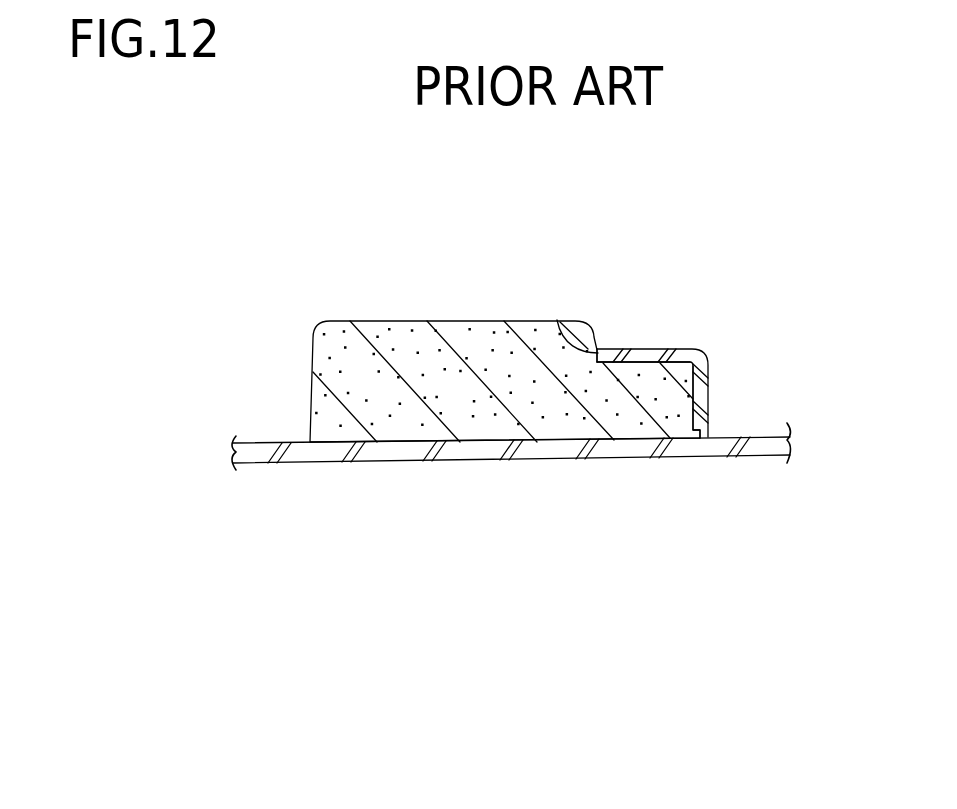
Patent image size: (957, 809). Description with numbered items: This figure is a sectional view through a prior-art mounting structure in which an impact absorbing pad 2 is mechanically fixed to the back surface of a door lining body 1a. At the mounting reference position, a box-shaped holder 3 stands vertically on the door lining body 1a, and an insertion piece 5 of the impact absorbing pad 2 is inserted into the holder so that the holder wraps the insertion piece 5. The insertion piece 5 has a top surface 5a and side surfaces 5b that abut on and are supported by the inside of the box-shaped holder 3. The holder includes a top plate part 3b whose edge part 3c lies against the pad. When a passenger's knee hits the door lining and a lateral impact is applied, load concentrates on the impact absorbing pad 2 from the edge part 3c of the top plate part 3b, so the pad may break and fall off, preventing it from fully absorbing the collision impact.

The door lining body 1a is at (373, 463).
The impact absorbing pad 2 is at (463, 343).
The box-shaped holder 3 is at (702, 338).
The top plate part 3b is at (647, 349).
The edge part 3c is at (557, 320).
The insertion piece 5 is at (666, 413).
The top surface 5a is at (605, 433).
The side surfaces 5b is at (710, 390).